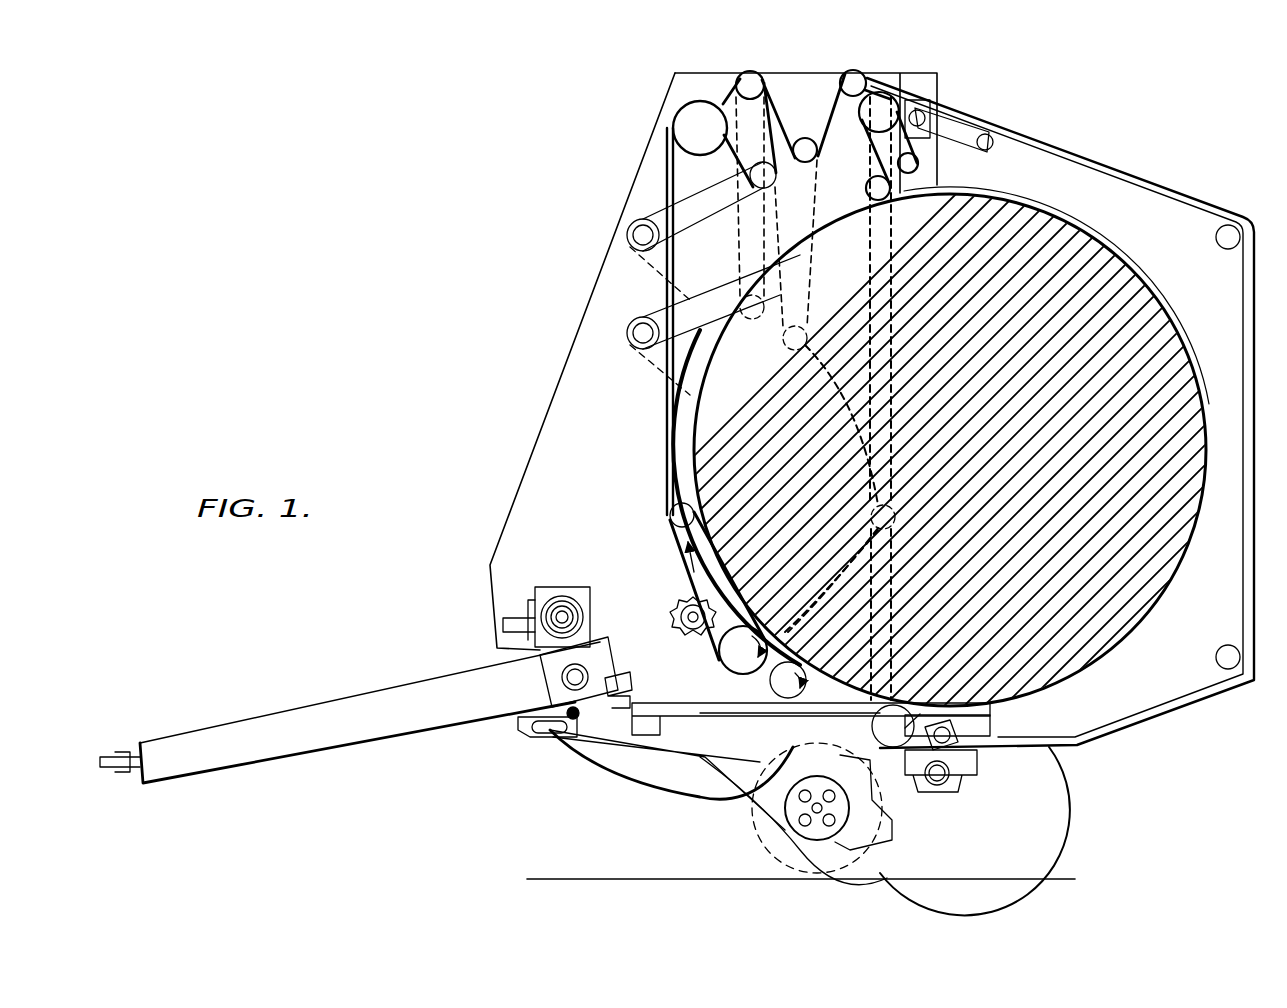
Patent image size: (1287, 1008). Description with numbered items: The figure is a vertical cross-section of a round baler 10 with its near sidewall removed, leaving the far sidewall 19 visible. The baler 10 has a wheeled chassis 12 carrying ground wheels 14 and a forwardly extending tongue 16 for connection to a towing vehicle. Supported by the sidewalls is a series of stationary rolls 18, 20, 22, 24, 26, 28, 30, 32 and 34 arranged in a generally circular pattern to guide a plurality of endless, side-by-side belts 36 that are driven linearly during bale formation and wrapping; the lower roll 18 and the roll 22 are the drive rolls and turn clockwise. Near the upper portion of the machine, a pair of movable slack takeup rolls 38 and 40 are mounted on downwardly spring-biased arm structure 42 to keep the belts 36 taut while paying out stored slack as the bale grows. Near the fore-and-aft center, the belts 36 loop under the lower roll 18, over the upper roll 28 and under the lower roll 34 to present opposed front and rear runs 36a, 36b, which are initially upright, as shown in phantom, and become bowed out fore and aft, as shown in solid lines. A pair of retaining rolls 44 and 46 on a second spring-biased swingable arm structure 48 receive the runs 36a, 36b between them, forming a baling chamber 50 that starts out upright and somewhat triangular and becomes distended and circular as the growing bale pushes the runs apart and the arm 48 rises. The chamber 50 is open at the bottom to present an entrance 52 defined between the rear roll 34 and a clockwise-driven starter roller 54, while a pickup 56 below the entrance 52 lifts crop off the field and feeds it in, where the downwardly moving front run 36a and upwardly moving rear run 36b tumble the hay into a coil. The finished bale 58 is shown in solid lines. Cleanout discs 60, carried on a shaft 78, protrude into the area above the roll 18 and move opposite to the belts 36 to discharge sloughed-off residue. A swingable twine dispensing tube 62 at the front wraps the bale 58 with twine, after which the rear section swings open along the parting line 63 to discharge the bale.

The round baler 10 is at (548, 322).
The wheeled chassis 12 is at (978, 785).
The ground wheels 14 is at (1015, 838).
The tongue 16 is at (347, 712).
The lower roll 18 is at (738, 654).
The sidewall 19 is at (538, 487).
The stationary roll 20 is at (676, 514).
The drive roll 22 is at (698, 122).
The stationary roll 24 is at (753, 86).
The stationary roll 26 is at (852, 83).
The upper roll 28 is at (887, 100).
The stationary roll 30 is at (1231, 224).
The stationary roll 32 is at (1220, 657).
The rear roll 34 is at (940, 715).
The belts 36 is at (659, 402).
The front run 36a is at (668, 470).
The rear run 36b is at (1182, 318).
The slack takeup roll 38 is at (746, 182).
The slack takeup roll 40 is at (805, 138).
The arm structure 42 is at (650, 210).
The retaining roll 44 is at (860, 200).
The retaining roll 46 is at (912, 176).
The second swingable arm structure 48 is at (650, 290).
The baling chamber 50 is at (831, 582).
The entrance 52 is at (878, 716).
The starter roller 54 is at (770, 683).
The pickup 56 is at (770, 850).
The bale 58 is at (1112, 262).
The cleanout discs 60 is at (676, 600).
The twine dispensing tube 62 is at (636, 774).
The parting line 63 is at (935, 160).
The shaft 78 is at (678, 635).